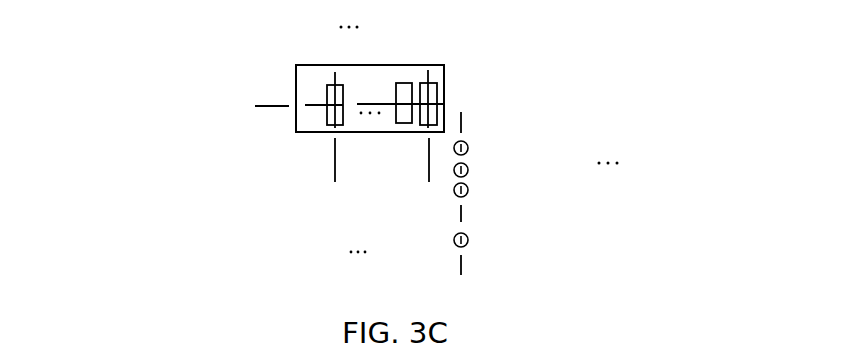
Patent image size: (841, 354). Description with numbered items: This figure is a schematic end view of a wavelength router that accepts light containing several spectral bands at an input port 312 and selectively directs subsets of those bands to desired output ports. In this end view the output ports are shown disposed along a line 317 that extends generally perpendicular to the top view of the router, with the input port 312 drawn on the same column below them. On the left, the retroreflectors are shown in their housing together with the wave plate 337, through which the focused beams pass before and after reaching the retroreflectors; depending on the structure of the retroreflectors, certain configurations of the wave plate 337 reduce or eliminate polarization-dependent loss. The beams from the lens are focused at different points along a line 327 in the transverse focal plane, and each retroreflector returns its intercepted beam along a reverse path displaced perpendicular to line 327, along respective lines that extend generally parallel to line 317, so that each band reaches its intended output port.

The wave plate 337 is at (295, 87).
The line 327 is at (277, 107).
The line 317 is at (462, 127).
The input port 312 is at (468, 240).